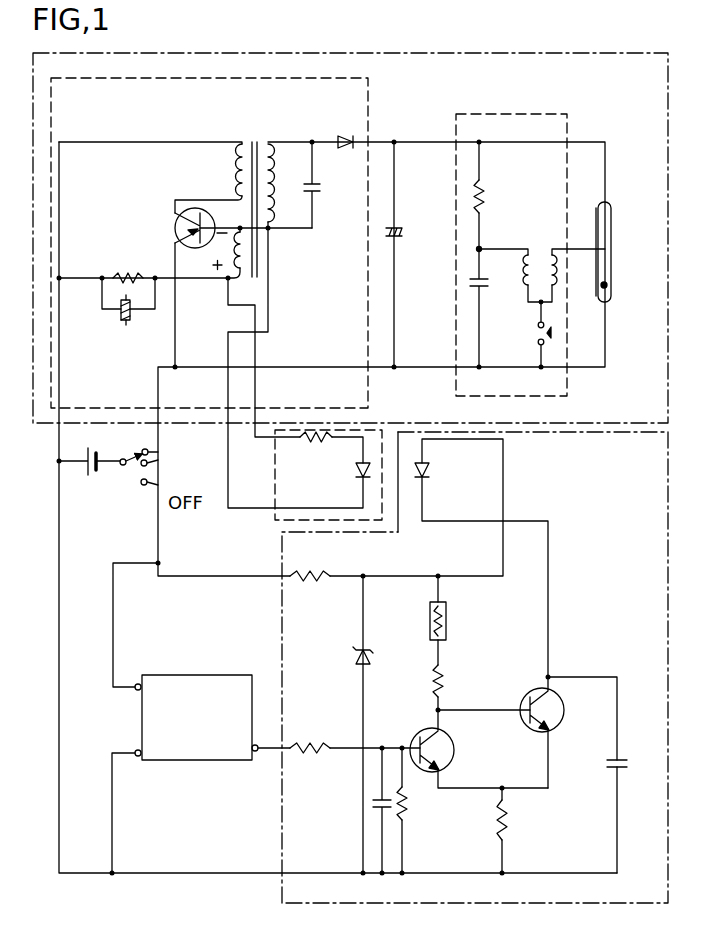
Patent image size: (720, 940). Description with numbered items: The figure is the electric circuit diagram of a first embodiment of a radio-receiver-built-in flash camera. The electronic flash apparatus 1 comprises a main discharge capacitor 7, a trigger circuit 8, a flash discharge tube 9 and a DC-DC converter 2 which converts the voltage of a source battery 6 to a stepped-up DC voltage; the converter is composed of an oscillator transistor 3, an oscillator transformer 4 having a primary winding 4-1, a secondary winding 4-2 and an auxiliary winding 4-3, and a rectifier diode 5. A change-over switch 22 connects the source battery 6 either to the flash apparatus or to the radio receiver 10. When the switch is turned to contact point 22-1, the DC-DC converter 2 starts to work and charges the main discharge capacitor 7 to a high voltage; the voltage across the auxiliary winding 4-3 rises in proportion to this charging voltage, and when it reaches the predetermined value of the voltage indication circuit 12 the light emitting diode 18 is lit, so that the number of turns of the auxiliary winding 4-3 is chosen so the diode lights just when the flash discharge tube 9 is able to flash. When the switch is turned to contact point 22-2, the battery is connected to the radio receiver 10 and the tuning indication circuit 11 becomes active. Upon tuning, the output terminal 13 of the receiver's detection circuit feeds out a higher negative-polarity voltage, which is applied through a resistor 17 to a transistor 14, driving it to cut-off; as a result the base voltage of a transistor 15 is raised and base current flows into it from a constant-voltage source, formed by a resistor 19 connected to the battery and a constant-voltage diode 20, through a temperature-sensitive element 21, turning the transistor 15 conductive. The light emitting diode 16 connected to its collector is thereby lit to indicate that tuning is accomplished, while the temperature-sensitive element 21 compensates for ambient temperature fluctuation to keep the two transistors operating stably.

The electronic flash apparatus 1 is at (518, 53).
The DC-DC converter 2 is at (369, 95).
The oscillator transistor 3 is at (178, 226).
The oscillator transformer 4 is at (258, 140).
The primary winding 4-1 is at (236, 174).
The secondary winding 4-2 is at (276, 186).
The auxiliary winding 4-3 is at (246, 256).
The rectifier diode 5 is at (350, 150).
The source battery 6 is at (86, 478).
The main discharge capacitor 7 is at (404, 232).
The trigger circuit 8 is at (567, 118).
The flash discharge tube 9 is at (612, 266).
The radio receiver 10 is at (214, 675).
The tuning indication circuit 11 is at (603, 905).
The voltage indication circuit 12 is at (275, 522).
The output terminal 13 is at (258, 760).
The transistor 14 is at (455, 749).
The transistor 15 is at (565, 707).
The light emitting diode 16 is at (431, 475).
The resistor 17 is at (317, 768).
The light emitting diode 18 is at (355, 474).
The resistor 19 is at (305, 585).
The constant-voltage diode 20 is at (372, 656).
The temperature-sensitive element 21 is at (447, 621).
The change-over switch 22 is at (130, 474).
The contact point 22-1 is at (143, 450).
The contact point 22-2 is at (150, 463).